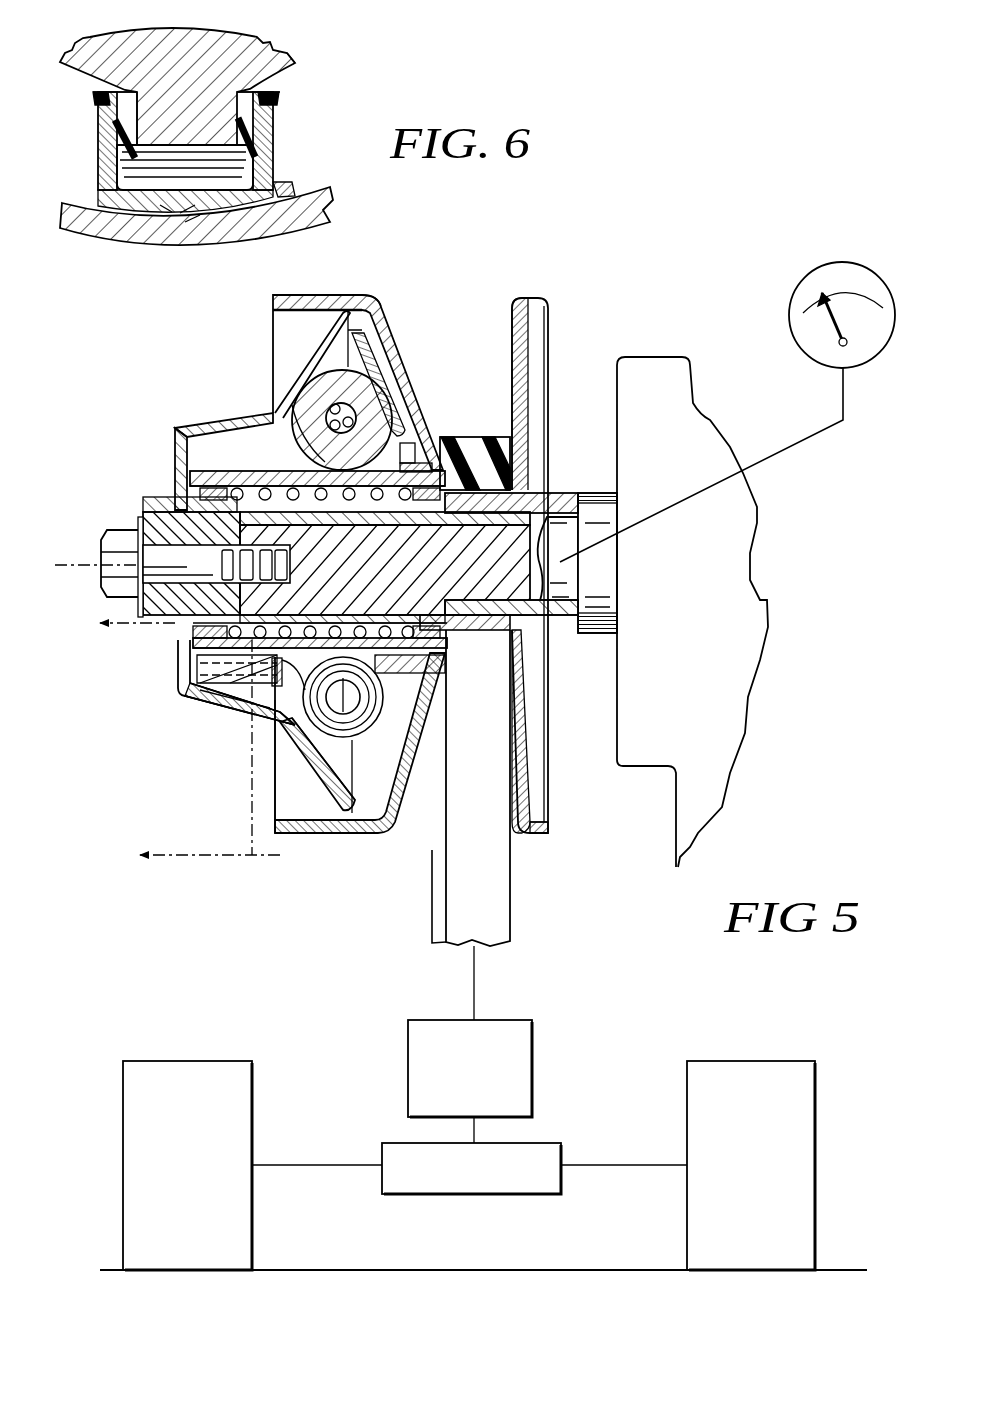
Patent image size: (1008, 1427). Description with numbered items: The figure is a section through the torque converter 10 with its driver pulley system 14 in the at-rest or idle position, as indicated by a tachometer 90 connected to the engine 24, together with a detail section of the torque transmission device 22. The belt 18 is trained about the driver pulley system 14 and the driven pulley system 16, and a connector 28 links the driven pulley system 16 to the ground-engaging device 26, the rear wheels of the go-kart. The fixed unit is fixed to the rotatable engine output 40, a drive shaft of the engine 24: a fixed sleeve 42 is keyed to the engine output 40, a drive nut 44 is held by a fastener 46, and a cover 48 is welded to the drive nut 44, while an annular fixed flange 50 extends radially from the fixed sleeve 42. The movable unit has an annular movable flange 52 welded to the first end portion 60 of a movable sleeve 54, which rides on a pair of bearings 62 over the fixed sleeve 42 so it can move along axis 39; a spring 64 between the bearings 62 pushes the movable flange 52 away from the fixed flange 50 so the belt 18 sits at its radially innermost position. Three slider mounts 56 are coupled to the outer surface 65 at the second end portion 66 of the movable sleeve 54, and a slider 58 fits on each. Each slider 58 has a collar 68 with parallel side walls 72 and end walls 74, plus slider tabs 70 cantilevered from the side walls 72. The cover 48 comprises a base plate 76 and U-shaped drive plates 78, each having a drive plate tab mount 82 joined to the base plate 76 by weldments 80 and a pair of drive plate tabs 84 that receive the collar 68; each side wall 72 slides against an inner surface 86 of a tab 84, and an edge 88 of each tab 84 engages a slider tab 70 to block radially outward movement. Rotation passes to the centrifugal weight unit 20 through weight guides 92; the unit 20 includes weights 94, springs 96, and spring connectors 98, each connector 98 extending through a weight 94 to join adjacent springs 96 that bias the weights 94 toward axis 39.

In FIG. 5, the torque converter 10 is at (248, 882).
In FIG. 5, the driver pulley system 14 is at (190, 737).
In FIG. 5, the driven pulley system 16 is at (532, 1098).
In FIG. 5, the belt 18 is at (465, 873).
In FIG. 5, the centrifugal weight unit 20 is at (267, 452).
In FIG. 5, the torque transmission device 22 is at (205, 702).
In FIG. 5, the engine 24 is at (643, 370).
In FIG. 5, the ground-engaging device 26 is at (123, 1222).
In FIG. 5, the connector 28 is at (519, 1194).
In FIG. 5, the axis 39 is at (63, 560).
In FIG. 5, the engine output 40 is at (567, 573).
In FIG. 5, the fixed sleeve 42 is at (477, 632).
In FIG. 5, the drive nut 44 is at (153, 503).
In FIG. 5, the fastener 46 is at (118, 590).
In FIG. 5, the cover 48 is at (263, 730).
In FIG. 5, the fixed flange 50 is at (512, 315).
In FIG. 5, the movable flange 52 is at (370, 298).
In FIG. 6, the movable sleeve 54 is at (270, 50).
In FIG. 5, the movable sleeve 54 is at (232, 467).
In FIG. 6, the slider mount 56 is at (183, 103).
In FIG. 5, the slider mount 56 is at (187, 710).
In FIG. 6, the slider 58 is at (260, 141).
In FIG. 5, the slider 58 is at (190, 694).
In FIG. 5, the first end portion 60 is at (413, 453).
In FIG. 5, the bearings 62 is at (218, 488).
In FIG. 5, the spring 64 is at (292, 672).
In FIG. 6, the outer surface 65 is at (290, 63).
In FIG. 5, the outer surface 65 is at (302, 390).
In FIG. 5, the second end portion 66 is at (178, 478).
In FIG. 6, the collar 68 is at (140, 115).
In FIG. 5, the collar 68 is at (262, 732).
In FIG. 6, the slider tab 70 is at (93, 98).
In FIG. 5, the slider tab 70 is at (197, 647).
In FIG. 6, the side wall 72 is at (115, 128).
In FIG. 5, the end wall 74 is at (193, 667).
In FIG. 6, the base plate 76 is at (117, 233).
In FIG. 5, the base plate 76 is at (317, 827).
In FIG. 6, the drive plate 78 is at (190, 220).
In FIG. 5, the drive plate 78 is at (307, 727).
In FIG. 6, the weldments 80 is at (92, 200).
In FIG. 6, the drive plate tab mount 82 is at (140, 213).
In FIG. 5, the drive plate tab mount 82 is at (220, 713).
In FIG. 6, the drive plate tab 84 is at (97, 162).
In FIG. 5, the drive plate tab 84 is at (300, 690).
In FIG. 6, the inner surface 86 is at (167, 207).
In FIG. 6, the edge 88 is at (117, 107).
In FIG. 5, the tachometer 90 is at (788, 300).
In FIG. 5, the weight guide 92 is at (363, 358).
In FIG. 5, the weight 94 is at (377, 413).
In FIG. 5, the spring 96 is at (363, 737).
In FIG. 5, the spring connector 98 is at (337, 410).